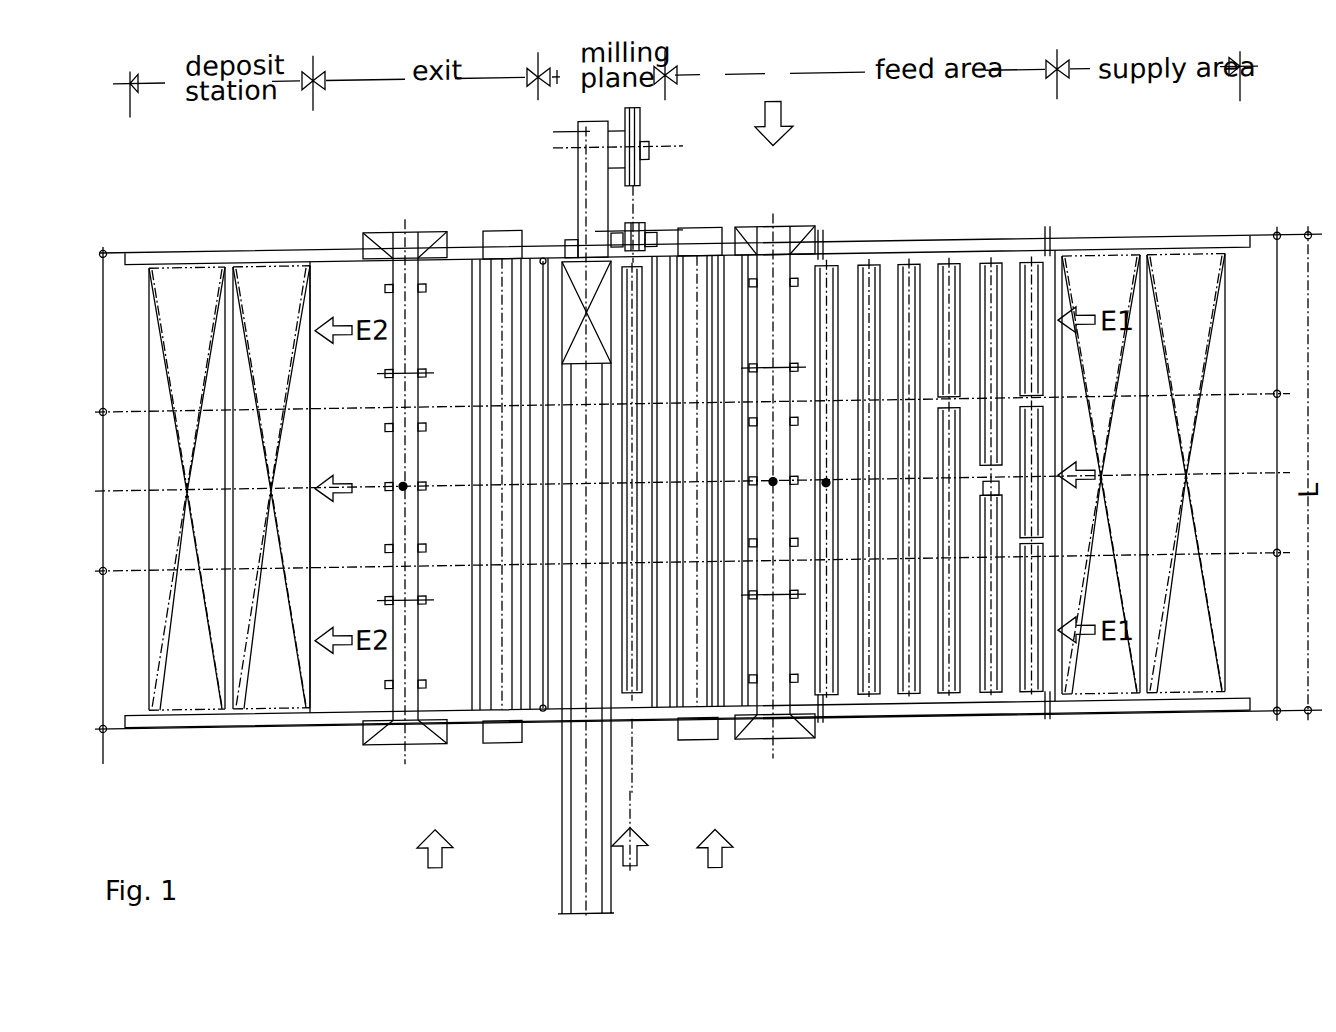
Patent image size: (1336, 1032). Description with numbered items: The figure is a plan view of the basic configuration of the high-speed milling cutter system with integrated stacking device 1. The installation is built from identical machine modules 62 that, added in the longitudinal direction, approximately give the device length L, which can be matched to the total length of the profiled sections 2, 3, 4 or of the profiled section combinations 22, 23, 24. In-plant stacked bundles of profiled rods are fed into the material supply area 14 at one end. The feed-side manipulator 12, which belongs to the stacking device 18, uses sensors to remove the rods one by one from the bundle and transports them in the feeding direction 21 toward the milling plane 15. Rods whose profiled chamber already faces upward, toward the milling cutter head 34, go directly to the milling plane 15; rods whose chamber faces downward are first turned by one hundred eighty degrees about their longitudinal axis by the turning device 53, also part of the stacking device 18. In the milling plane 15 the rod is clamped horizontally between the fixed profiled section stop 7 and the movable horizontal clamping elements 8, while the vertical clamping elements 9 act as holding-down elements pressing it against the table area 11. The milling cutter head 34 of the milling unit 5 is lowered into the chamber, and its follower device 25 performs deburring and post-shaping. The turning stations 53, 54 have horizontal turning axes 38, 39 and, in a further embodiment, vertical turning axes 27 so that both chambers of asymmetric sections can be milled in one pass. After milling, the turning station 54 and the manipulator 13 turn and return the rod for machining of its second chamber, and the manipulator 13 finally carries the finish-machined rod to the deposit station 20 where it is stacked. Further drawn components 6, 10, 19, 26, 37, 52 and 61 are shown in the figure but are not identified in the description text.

The high-speed milling cutter system with integrated stacking device 1 is at (782, 116).
The profiled section 2 is at (825, 272).
The profiled section 3 is at (868, 273).
The profiled section 4 is at (910, 274).
The milling unit 5 is at (588, 207).
The milling cutter drive 6 is at (640, 257).
The fixed profiled section stop 7 is at (617, 527).
The movable horizontal clamping element 8 is at (645, 727).
The vertical clamping element 9 is at (648, 375).
The lower guide 10 is at (630, 597).
The table area 11 is at (1057, 268).
The feed-side manipulator 12 is at (782, 234).
The manipulator 13 is at (390, 236).
The material supply area 14 is at (1143, 474).
The milling plane 15 is at (628, 453).
The stacking device 18 is at (575, 863).
The milling feed direction 19 is at (630, 844).
The deposit station 20 is at (229, 488).
The feeding direction 21 is at (1096, 476).
The profiled section combination 22 is at (1030, 273).
The profiled section combination 23 is at (982, 692).
The profiled section combination 24 is at (948, 272).
The follower device 25 is at (633, 259).
The stop pin 26 is at (818, 699).
The vertical turning axis 27 is at (403, 482).
The milling cutter head 34 is at (647, 140).
The column head 37 is at (555, 132).
The horizontal turning axis 38 is at (868, 696).
The horizontal turning axis 39 is at (907, 696).
The exit direction 52 is at (350, 489).
The turning device 53 is at (705, 235).
The turning station 54 is at (490, 237).
The milling zone width 61 is at (541, 484).
The machine module 62 is at (689, 496).